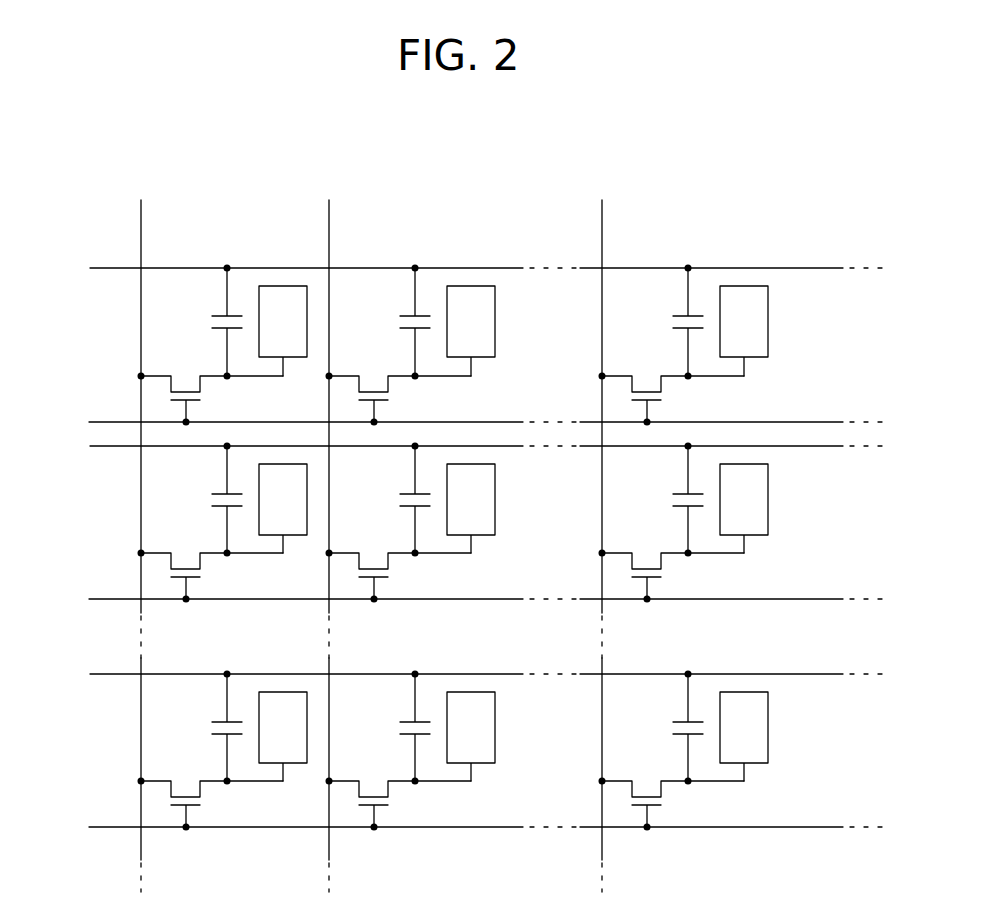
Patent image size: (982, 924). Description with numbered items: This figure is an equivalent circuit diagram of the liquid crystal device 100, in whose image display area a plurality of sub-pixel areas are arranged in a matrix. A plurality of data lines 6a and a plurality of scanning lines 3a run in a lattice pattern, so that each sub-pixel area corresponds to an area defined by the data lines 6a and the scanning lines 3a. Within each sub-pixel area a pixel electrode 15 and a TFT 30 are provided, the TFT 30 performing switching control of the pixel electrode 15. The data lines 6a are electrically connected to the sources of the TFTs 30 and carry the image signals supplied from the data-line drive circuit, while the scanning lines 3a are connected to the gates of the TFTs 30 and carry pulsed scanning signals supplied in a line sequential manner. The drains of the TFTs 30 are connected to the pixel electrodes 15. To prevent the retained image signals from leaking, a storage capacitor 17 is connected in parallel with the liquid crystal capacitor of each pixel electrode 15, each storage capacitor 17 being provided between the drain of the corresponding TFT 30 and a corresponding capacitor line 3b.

The liquid crystal device 100 is at (773, 168).
The data line 6a is at (674, 202).
The capacitor line 3b is at (100, 268).
The scanning line 3a is at (100, 422).
The pixel electrode 15 is at (279, 293).
The storage capacitor 17 is at (210, 323).
The TFT 30 is at (205, 398).